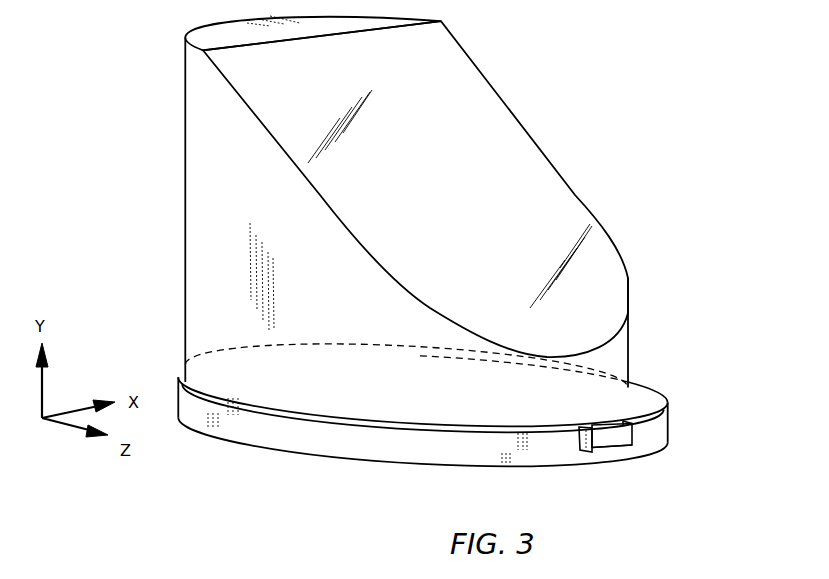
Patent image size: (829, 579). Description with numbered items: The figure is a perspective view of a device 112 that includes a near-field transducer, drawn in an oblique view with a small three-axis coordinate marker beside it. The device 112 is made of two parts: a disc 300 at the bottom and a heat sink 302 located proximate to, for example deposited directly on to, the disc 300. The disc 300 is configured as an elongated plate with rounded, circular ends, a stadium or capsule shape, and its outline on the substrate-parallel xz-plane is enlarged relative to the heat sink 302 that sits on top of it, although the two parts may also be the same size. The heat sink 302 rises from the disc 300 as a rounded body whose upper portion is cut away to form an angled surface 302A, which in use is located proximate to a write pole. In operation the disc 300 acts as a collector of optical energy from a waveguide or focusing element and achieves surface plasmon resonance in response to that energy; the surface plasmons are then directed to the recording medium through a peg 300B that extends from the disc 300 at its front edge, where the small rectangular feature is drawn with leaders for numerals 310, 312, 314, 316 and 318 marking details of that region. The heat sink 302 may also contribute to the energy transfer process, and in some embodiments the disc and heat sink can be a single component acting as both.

The device 112 is at (485, 271).
The disc 300 is at (472, 441).
The peg 300B is at (615, 452).
The heat sink 302 is at (406, 202).
The angled surface 302A is at (478, 100).
The recess 310 is at (607, 442).
The upper surface of base 312 is at (605, 422).
The side wall of recess 314 is at (578, 440).
The connector 316 is at (634, 436).
The lower wall of recess 318 is at (633, 447).